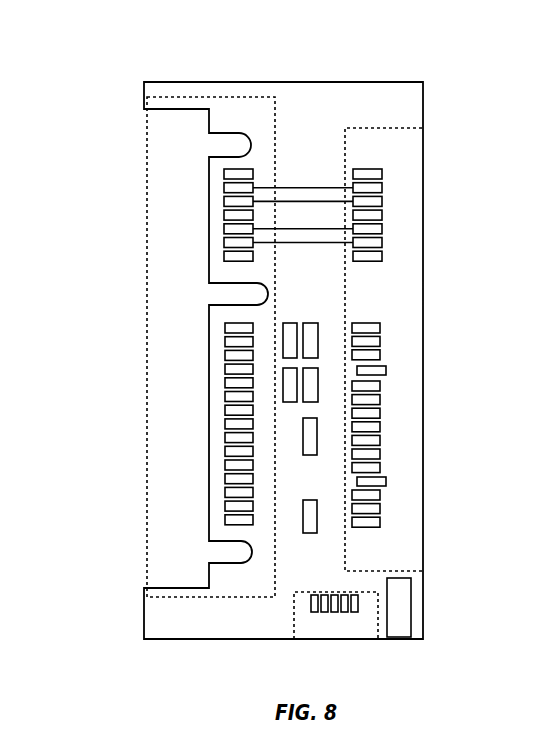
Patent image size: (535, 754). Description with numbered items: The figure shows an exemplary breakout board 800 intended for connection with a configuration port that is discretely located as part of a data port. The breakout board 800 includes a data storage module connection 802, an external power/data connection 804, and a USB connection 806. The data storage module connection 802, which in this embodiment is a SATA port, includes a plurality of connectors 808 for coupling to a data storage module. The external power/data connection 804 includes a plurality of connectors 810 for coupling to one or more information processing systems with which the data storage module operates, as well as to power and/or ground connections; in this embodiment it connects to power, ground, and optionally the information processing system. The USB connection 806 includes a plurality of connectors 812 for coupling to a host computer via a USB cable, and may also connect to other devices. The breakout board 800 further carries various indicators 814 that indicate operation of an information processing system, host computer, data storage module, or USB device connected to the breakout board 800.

The breakout board 800 is at (103, 62).
The data storage module connection 802 is at (255, 590).
The external power/data connection 804 is at (415, 302).
The USB connection 806 is at (308, 632).
The connectors 808 is at (225, 342).
The connectors 810 is at (387, 482).
The connectors 812 is at (325, 612).
The indicators 814 is at (287, 402).